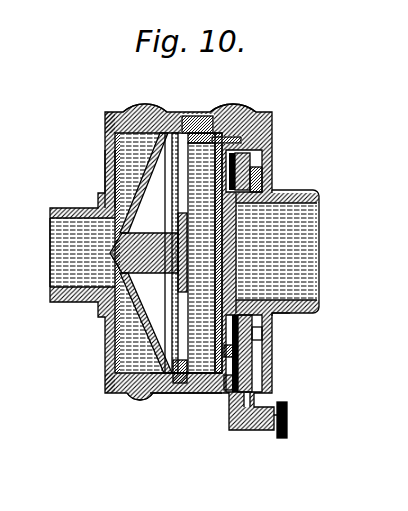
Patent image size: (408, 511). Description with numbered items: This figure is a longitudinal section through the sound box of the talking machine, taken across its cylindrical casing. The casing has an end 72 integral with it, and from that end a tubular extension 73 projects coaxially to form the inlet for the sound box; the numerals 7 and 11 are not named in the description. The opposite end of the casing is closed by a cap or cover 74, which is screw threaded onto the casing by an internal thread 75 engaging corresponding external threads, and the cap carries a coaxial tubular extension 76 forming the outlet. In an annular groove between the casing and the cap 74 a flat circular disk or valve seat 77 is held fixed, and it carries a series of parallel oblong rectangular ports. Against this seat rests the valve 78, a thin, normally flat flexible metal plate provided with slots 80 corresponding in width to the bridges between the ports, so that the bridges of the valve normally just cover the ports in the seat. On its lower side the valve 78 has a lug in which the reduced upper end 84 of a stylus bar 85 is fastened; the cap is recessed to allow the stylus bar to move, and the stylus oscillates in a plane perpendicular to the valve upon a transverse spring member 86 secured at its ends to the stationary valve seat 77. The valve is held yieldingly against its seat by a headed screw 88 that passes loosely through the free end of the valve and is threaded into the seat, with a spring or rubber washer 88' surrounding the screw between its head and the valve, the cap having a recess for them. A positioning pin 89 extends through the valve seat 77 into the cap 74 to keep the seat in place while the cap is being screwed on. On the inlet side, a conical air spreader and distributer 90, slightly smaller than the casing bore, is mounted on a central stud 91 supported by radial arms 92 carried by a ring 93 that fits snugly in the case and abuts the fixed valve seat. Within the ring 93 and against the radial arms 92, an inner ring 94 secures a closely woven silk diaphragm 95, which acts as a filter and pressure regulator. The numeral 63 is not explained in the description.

The dome projection 7 is at (128, 108).
The housing 11 is at (105, 125).
The lever 63 is at (274, 348).
The end 72 is at (105, 180).
The tubular extension 73 is at (68, 210).
The cap or cover 74 is at (273, 125).
The internal thread 75 is at (203, 393).
The tubular extension 76 is at (299, 193).
The flat circular disk or valve seat 77 is at (177, 393).
The valve 78 is at (240, 262).
The slots 80 is at (215, 255).
The reduced upper end 84 is at (274, 318).
The stylus bar 85 is at (274, 367).
The transverse spring member 86 is at (252, 353).
The headed screw 88 is at (298, 160).
The spring or rubber washer 88' is at (303, 150).
The positioning pin 89 is at (238, 140).
The conical air spreader and distributer 90 is at (138, 322).
The central stud 91 is at (50, 251).
The radial arms 92 is at (140, 342).
The ring 93 is at (200, 215).
The inner ring 94 is at (187, 228).
The closely woven silk diaphragm 95 is at (128, 397).